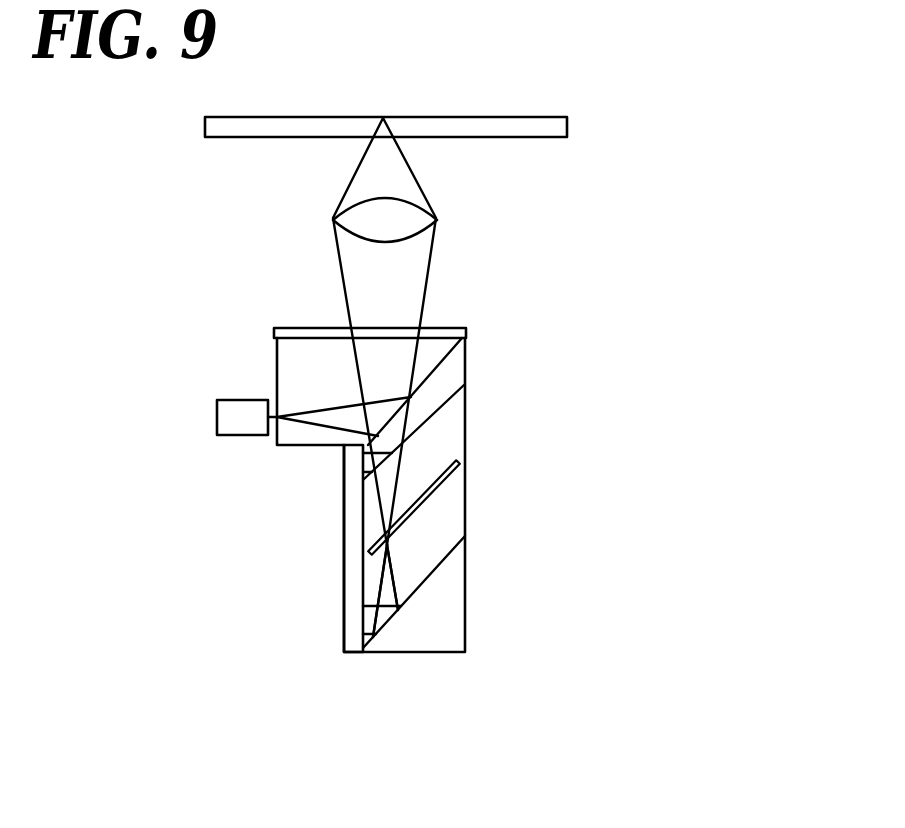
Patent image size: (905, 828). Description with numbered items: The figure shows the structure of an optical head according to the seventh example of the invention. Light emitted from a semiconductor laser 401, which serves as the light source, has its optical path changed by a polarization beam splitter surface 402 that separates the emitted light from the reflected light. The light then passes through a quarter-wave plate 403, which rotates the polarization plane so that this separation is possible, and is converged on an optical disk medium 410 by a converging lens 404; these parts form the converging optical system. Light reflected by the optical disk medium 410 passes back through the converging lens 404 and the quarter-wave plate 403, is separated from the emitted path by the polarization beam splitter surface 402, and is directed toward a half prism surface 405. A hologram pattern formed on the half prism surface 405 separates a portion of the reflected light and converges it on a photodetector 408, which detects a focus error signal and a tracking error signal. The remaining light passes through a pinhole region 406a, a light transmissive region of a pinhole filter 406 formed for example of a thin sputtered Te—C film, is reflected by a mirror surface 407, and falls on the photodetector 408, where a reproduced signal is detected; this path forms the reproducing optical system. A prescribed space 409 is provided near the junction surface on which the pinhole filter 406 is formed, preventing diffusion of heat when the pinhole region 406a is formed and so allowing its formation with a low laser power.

The semiconductor laser 401 is at (238, 408).
The polarization beam splitter surface 402 is at (447, 357).
The quarter-wave plate 403 is at (438, 330).
The converging lens 404 is at (438, 210).
The half prism surface 405 is at (433, 405).
The pinhole filter 406 is at (447, 481).
The pinhole region 406a is at (392, 548).
The mirror surface 407 is at (447, 556).
The photodetector 408 is at (350, 514).
The space 409 is at (380, 543).
The optical disk medium 410 is at (516, 117).